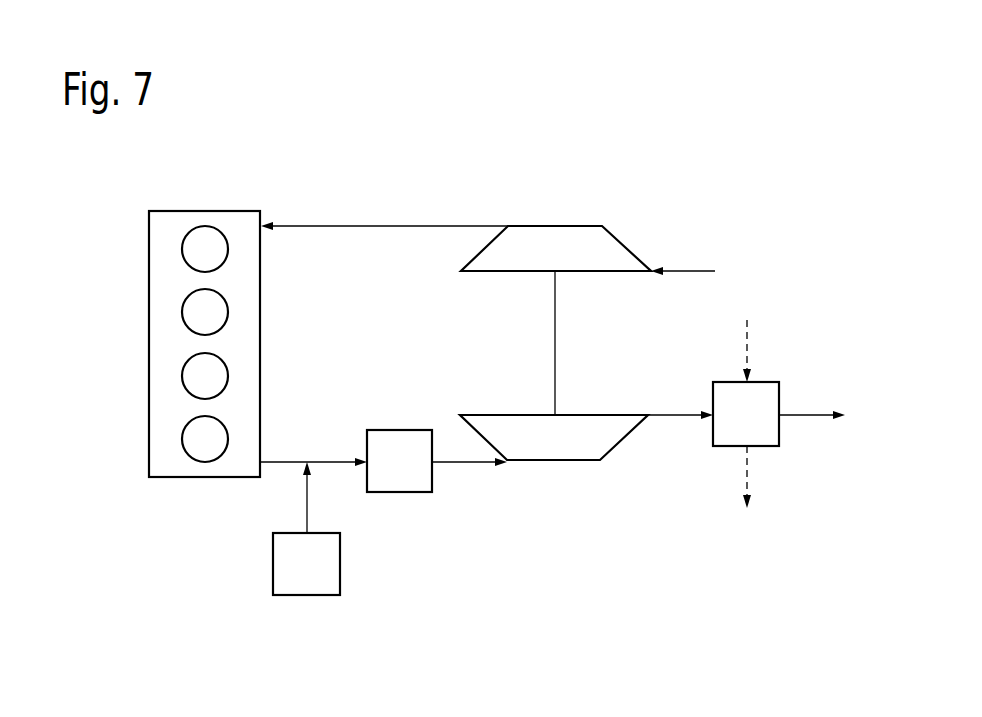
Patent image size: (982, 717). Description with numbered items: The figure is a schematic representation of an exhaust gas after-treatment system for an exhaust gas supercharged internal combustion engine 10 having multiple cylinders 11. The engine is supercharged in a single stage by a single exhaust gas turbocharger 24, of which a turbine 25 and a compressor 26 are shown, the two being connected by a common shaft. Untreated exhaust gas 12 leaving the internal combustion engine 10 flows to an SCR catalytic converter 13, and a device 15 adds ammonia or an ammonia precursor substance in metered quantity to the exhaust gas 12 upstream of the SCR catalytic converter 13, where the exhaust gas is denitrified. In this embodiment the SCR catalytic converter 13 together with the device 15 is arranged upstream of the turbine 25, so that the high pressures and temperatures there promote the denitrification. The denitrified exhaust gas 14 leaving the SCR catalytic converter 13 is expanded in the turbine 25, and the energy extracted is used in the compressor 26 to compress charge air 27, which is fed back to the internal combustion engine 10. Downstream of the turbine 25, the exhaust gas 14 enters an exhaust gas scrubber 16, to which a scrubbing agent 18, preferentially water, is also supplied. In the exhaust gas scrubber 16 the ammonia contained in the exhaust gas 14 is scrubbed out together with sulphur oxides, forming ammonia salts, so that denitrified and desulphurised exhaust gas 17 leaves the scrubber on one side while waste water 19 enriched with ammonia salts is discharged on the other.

The internal combustion engine 10 is at (239, 200).
The cylinders 11 is at (194, 255).
The exhaust gas 12 is at (283, 460).
The SCR catalytic converter 13 is at (398, 437).
The treated exhaust gas 14 is at (460, 465).
The device 15 is at (325, 567).
The exhaust gas scrubber 16 is at (762, 390).
The desulphurised exhaust gas 17 is at (803, 418).
The scrubbing agent 18 is at (741, 333).
The waste water 19 is at (741, 473).
The exhaust gas turbocharger 24 is at (558, 343).
The turbine 25 is at (554, 410).
The compressor 26 is at (600, 262).
The charge air 27 is at (697, 270).